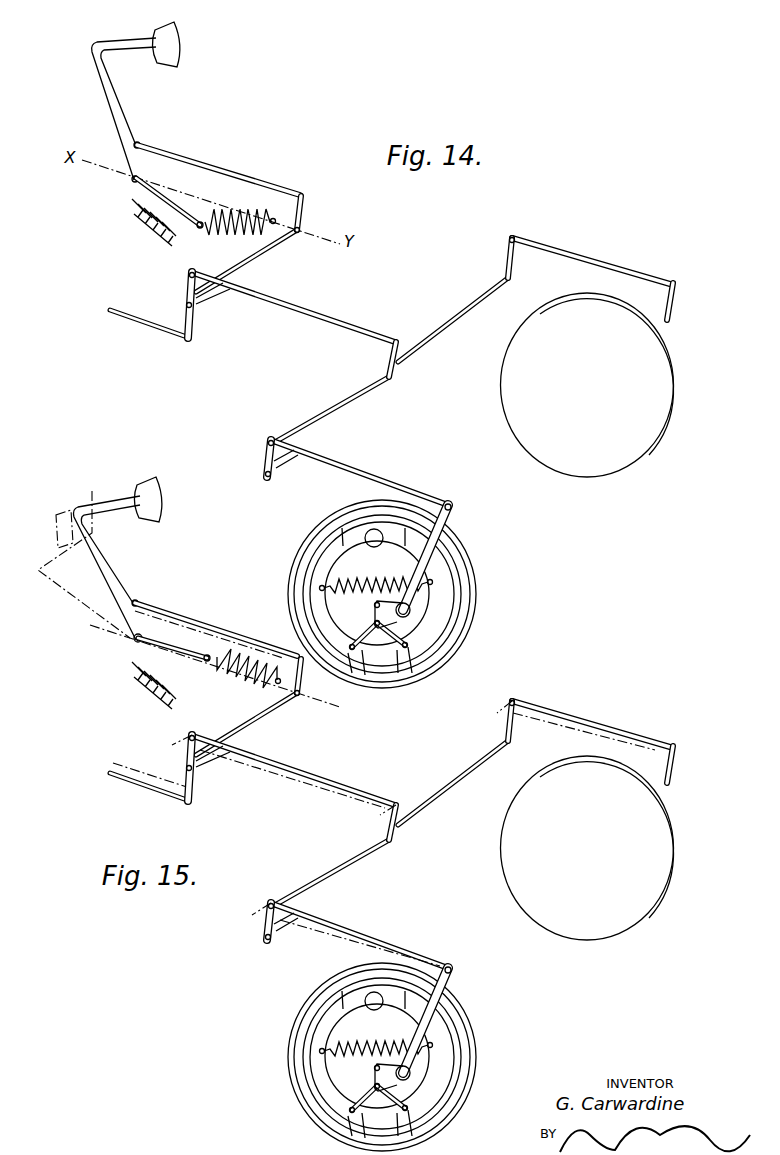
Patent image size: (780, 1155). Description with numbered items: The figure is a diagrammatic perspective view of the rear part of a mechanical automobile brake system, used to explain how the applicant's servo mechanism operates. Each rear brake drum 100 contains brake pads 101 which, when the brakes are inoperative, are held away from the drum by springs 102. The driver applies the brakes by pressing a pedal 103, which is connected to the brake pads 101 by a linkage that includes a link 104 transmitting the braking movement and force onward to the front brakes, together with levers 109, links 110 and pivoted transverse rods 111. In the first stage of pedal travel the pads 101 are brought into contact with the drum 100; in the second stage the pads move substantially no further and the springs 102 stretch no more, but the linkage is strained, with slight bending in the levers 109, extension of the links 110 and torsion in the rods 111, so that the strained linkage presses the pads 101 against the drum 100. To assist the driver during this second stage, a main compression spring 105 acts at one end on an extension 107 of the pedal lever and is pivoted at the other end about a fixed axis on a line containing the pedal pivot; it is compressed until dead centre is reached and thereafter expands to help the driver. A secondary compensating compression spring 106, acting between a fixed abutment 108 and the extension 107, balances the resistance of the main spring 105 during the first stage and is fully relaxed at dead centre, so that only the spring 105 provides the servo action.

In FIG. 14, the rear brake drum 100 is at (638, 430).
In FIG. 15, the rear brake drum 100 is at (481, 953).
In FIG. 14, the brake pad 101 is at (325, 565).
In FIG. 15, the brake pad 101 is at (372, 1060).
In FIG. 14, the spring 102 is at (377, 583).
In FIG. 15, the spring 102 is at (340, 1036).
In FIG. 14, the pedal 103 is at (170, 47).
In FIG. 15, the pedal 103 is at (100, 592).
In FIG. 14, the link 104 is at (137, 322).
In FIG. 15, the link 104 is at (150, 789).
In FIG. 14, the main spring 105 is at (213, 215).
In FIG. 15, the main spring 105 is at (239, 632).
In FIG. 14, the secondary or compensating compression spring 106 is at (155, 206).
In FIG. 15, the secondary or compensating compression spring 106 is at (133, 680).
In FIG. 14, the extension of the pedal lever 107 is at (161, 185).
In FIG. 15, the extension of the pedal lever 107 is at (174, 613).
In FIG. 14, the fixed abutment 108 is at (148, 227).
In FIG. 14, the lever 109 is at (303, 212).
In FIG. 15, the lever 109 is at (422, 875).
In FIG. 14, the link 110 is at (262, 183).
In FIG. 15, the link 110 is at (402, 785).
In FIG. 14, the pivoted transverse rod 111 is at (250, 267).
In FIG. 15, the pivoted transverse rod 111 is at (352, 799).